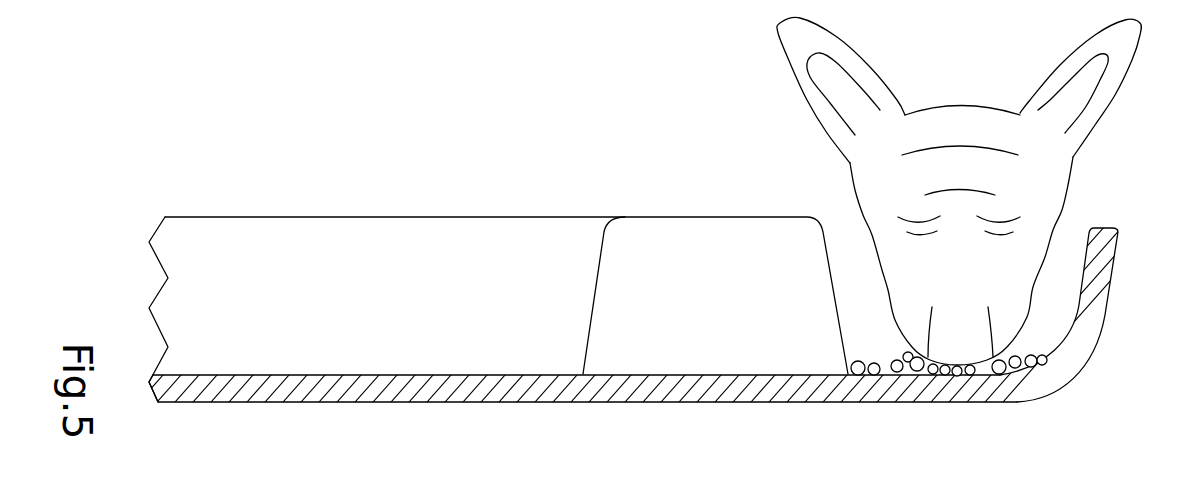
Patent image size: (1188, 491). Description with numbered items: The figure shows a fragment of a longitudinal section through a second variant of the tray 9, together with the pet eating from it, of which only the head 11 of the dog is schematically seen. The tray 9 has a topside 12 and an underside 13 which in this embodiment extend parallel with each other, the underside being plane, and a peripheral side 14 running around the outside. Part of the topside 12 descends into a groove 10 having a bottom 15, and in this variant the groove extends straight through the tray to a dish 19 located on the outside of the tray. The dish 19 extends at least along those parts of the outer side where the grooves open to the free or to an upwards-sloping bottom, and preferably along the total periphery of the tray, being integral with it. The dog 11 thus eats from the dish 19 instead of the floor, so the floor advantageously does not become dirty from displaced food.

The tray 9 is at (375, 174).
The groove 10 is at (457, 226).
The head 11 is at (952, 102).
The topside 12 is at (693, 218).
The underside 13 is at (360, 402).
The peripheral side 14 is at (837, 298).
The bottom 15 is at (343, 375).
The dish 19 is at (1100, 323).